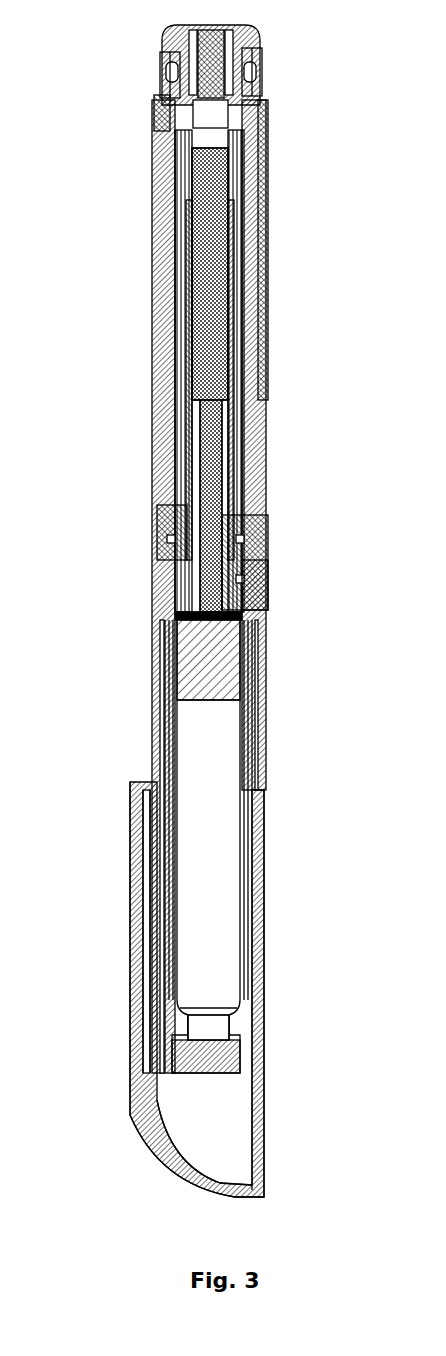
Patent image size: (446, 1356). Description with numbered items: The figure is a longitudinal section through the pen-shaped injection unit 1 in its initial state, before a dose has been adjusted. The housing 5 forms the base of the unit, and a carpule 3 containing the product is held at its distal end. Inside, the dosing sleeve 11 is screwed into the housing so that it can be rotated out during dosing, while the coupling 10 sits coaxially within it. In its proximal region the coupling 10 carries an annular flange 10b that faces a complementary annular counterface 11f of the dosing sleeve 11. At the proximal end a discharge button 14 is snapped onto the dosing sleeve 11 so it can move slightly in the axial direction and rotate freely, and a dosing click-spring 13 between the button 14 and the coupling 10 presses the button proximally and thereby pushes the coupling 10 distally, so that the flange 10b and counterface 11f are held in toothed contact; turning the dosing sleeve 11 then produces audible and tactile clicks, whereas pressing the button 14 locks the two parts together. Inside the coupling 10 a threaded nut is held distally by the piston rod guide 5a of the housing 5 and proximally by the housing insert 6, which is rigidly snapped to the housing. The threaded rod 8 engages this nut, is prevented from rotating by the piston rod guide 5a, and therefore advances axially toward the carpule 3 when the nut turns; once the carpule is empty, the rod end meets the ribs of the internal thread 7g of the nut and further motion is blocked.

The housing 1 is at (140, 805).
The carpule 3 is at (210, 817).
The housing 5 is at (153, 327).
The piston rod guide 5a is at (260, 570).
The housing insert 6 is at (267, 520).
The internal thread 7g is at (157, 518).
The threaded rod 8 is at (178, 415).
The coupling 10 is at (252, 182).
The annular flange 10b is at (157, 80).
The dosing sleeve 11 is at (270, 137).
The annular counterface 11f is at (157, 100).
The dosing click-spring 13 is at (263, 57).
The discharge button 14 is at (175, 45).